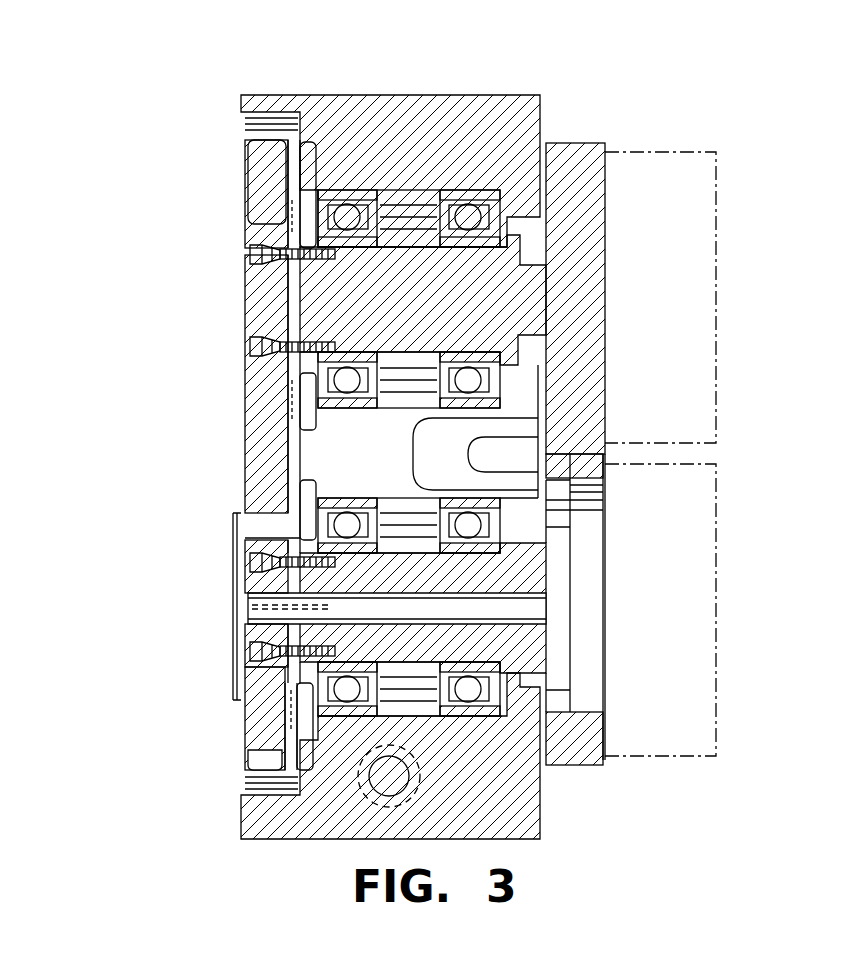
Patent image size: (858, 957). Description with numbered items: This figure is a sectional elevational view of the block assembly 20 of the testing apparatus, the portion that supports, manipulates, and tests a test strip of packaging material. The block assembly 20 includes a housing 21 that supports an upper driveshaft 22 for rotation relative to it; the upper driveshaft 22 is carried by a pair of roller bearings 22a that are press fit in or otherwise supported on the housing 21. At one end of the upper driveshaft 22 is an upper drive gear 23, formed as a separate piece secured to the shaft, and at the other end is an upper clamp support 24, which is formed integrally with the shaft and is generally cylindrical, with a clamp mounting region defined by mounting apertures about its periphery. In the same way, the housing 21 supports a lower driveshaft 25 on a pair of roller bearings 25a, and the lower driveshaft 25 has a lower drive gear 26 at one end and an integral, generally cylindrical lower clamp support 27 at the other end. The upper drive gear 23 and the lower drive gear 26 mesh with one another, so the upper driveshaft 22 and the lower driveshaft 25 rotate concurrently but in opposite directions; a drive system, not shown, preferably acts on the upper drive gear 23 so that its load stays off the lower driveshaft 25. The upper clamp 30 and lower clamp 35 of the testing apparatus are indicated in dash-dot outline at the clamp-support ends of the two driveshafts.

The block assembly 20 is at (612, 95).
The housing 21 is at (398, 124).
The upper driveshaft 22 is at (255, 300).
The roller bearings 22a is at (338, 200).
The upper drive gear 23 is at (256, 193).
The upper clamp support 24 is at (588, 183).
The lower driveshaft 25 is at (250, 588).
The roller bearings 25a is at (343, 702).
The lower drive gear 26 is at (256, 727).
The lower clamp support 27 is at (603, 762).
The upper clamp 30 is at (724, 218).
The lower clamp 35 is at (718, 655).